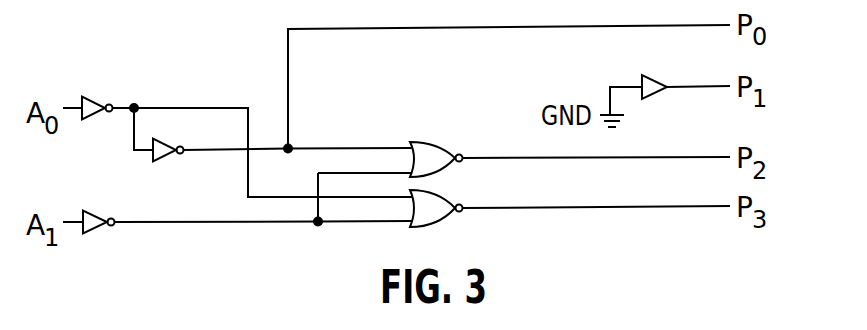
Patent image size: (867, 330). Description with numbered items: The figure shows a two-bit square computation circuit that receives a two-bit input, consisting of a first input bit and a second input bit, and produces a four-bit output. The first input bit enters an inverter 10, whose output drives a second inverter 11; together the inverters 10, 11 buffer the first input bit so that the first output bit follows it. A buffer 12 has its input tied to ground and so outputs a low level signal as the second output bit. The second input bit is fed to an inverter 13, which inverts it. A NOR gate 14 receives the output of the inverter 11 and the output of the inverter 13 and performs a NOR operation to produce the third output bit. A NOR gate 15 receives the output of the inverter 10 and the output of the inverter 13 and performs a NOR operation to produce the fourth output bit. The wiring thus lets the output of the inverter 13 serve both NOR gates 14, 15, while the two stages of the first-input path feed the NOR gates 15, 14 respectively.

The inverter 10 is at (89, 120).
The inverter 11 is at (168, 141).
The buffer 12 is at (655, 77).
The inverter 13 is at (89, 233).
The NOR gate 14 is at (427, 139).
The NOR gate 15 is at (445, 192).